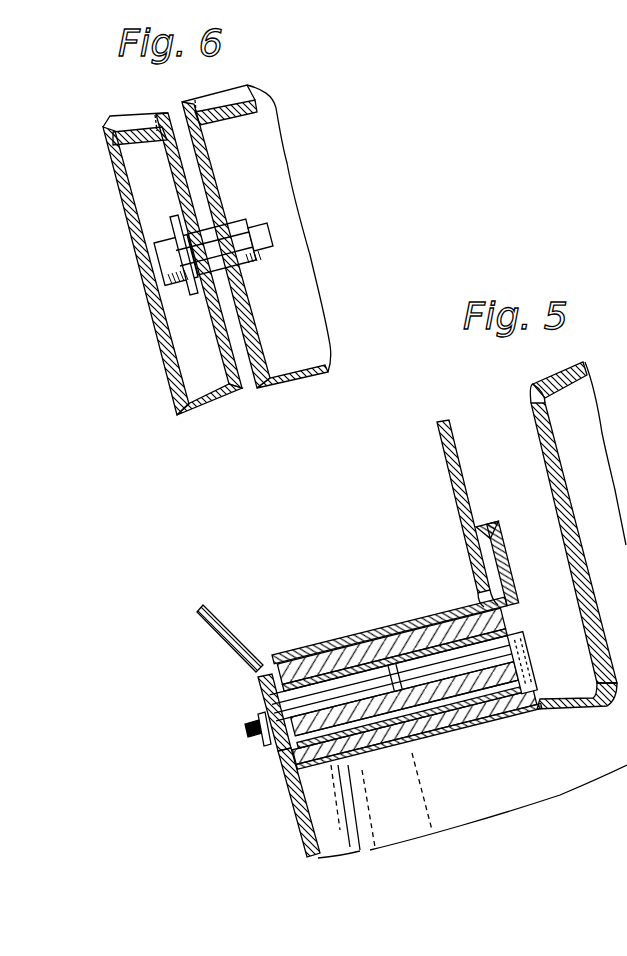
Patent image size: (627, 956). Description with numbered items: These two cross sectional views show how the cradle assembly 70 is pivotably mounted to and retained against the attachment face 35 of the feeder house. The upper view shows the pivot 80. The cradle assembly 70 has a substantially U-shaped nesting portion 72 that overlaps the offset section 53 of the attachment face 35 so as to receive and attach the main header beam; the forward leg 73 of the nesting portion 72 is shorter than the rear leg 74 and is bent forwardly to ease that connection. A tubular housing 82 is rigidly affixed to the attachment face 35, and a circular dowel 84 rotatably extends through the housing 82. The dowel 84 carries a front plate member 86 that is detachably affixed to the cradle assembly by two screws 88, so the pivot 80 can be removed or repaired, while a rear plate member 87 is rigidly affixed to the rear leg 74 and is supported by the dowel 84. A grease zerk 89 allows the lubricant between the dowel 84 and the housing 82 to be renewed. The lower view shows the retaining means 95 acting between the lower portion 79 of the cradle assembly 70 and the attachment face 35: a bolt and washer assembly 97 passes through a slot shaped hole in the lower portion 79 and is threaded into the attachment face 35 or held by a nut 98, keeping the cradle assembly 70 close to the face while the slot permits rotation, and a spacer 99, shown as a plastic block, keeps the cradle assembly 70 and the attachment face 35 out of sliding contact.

In FIG. 6, the attachment face 35 is at (312, 386).
In FIG. 5, the attachment face 35 is at (515, 417).
In FIG. 5, the offset section 53 is at (560, 700).
In FIG. 6, the cradle assembly 70 is at (155, 329).
In FIG. 5, the cradle assembly 70 is at (297, 824).
In FIG. 5, the nesting portion 72 is at (397, 623).
In FIG. 5, the forward leg 73 is at (205, 607).
In FIG. 5, the rear leg 74 is at (445, 457).
In FIG. 6, the lower portion 79 is at (208, 404).
In FIG. 5, the pivot 80 is at (196, 706).
In FIG. 5, the tubular housing 82 is at (485, 628).
In FIG. 5, the circular dowel 84 is at (533, 653).
In FIG. 5, the front plate member 86 is at (277, 768).
In FIG. 5, the rear plate member 87 is at (502, 578).
In FIG. 5, the screws 88 is at (245, 728).
In FIG. 5, the grease zerk 89 is at (255, 742).
In FIG. 6, the retaining means 95 is at (256, 188).
In FIG. 6, the bolt and washer assembly 97 is at (190, 290).
In FIG. 6, the nut 98 is at (257, 268).
In FIG. 6, the spacer 99 is at (243, 362).